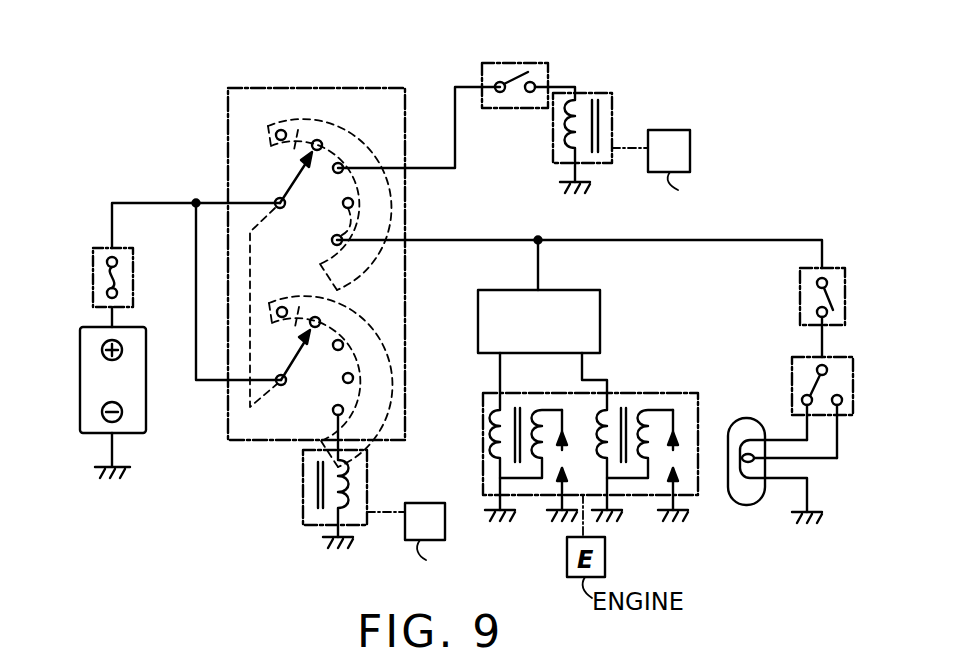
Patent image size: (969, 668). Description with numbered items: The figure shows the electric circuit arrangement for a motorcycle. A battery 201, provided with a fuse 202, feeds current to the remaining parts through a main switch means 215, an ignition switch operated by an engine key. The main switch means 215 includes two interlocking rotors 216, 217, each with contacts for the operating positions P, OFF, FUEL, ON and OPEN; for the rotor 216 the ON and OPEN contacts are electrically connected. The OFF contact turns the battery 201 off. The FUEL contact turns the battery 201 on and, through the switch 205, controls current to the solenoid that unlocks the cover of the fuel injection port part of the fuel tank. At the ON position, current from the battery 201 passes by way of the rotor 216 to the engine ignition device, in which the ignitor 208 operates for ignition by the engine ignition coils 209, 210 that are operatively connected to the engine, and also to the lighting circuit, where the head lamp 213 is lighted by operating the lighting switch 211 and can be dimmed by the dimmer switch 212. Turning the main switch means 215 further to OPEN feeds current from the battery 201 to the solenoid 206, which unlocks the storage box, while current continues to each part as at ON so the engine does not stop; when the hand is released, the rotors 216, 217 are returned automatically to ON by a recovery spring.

The battery 201 is at (80, 433).
The fuse 202 is at (93, 258).
The unlocking switch for the cover of the fuel injection port part 205 is at (500, 63).
The solenoid 206 is at (307, 488).
The ignitor 208 is at (600, 312).
The engine ignition coil 209 is at (492, 440).
The engine ignition coil 210 is at (633, 412).
The lighting switch 211 is at (800, 298).
The dimmer switch 212 is at (792, 376).
The head lamp 213 is at (730, 486).
The main switch means 215 is at (305, 88).
The rotor 216 is at (276, 198).
The rotor 217 is at (286, 386).